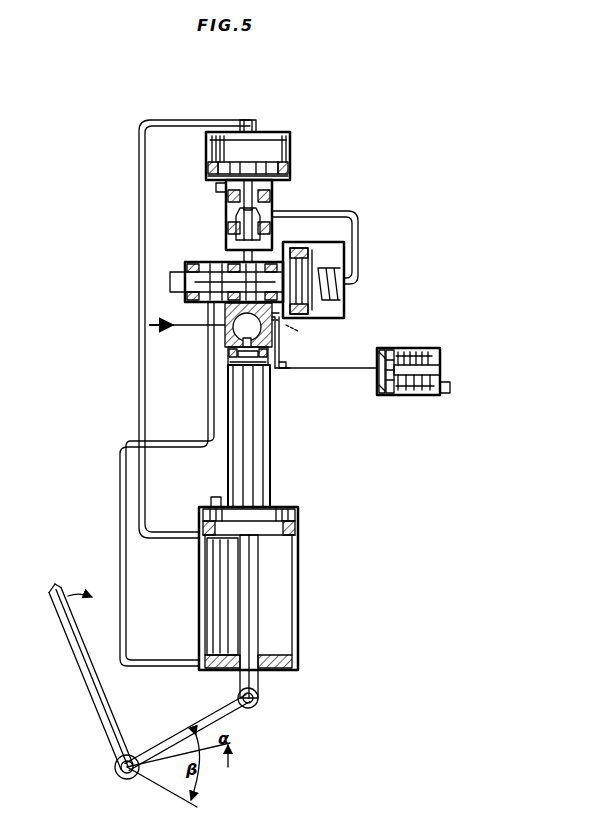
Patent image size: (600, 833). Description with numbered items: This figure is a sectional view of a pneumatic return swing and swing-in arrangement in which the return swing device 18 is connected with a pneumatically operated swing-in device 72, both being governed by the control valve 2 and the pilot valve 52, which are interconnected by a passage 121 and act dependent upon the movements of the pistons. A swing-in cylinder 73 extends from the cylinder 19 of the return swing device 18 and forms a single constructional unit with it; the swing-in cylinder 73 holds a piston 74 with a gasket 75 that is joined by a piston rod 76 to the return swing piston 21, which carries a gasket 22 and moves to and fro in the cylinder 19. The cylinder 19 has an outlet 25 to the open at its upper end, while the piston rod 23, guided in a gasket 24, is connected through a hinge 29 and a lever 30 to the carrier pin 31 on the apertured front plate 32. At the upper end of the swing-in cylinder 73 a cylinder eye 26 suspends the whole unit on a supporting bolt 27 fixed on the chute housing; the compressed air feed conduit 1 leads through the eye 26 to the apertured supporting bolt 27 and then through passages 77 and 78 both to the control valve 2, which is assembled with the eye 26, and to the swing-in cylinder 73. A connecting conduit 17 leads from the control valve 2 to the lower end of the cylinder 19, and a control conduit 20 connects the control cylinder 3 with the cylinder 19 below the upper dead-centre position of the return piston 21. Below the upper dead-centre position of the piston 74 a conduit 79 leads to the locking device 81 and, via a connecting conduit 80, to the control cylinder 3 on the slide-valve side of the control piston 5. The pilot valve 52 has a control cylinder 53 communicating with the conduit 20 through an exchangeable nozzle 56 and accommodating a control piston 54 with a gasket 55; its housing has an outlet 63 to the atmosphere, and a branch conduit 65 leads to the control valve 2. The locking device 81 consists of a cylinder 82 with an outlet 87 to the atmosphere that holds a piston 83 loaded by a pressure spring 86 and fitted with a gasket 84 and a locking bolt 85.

The compressed air feed conduit 1 is at (172, 331).
The control valve 2 is at (306, 240).
The control cylinder 3 is at (345, 295).
The control piston 5 is at (300, 247).
The connecting conduit 17 is at (208, 406).
The return swing device 18 is at (210, 665).
The cylinder 19 is at (298, 600).
The control conduit 20 is at (139, 182).
The return swing piston 21 is at (298, 516).
The gasket 22 is at (298, 530).
The piston rod 23 is at (258, 580).
The gasket 24 is at (270, 662).
The outlet 25 is at (216, 497).
The cylinder eye 26 is at (279, 345).
The supporting bolt 27 is at (295, 327).
The hinge 29 is at (259, 696).
The lever 30 is at (240, 716).
The carrier pin 31 is at (118, 778).
The apertured front plate 32 is at (95, 716).
The pilot valve 52 is at (226, 126).
The control cylinder 53 is at (270, 146).
The control piston 54 is at (262, 160).
The gasket 55 is at (290, 167).
The exchangeable nozzle 56 is at (256, 124).
The outlet 63 is at (216, 188).
The branch conduit 65 is at (358, 224).
The swing-in device 72 is at (268, 392).
The swing-in cylinder 73 is at (263, 437).
The piston 74 is at (230, 366).
The gasket 75 is at (230, 360).
The piston rod 76 is at (248, 472).
The passage 77 is at (210, 306).
The passage 78 is at (226, 338).
The conduit 79 is at (346, 367).
The connecting conduit 80 is at (282, 370).
The locking device 81 is at (430, 336).
The cylinder 82 is at (418, 393).
The piston 83 is at (380, 372).
The gasket 84 is at (389, 394).
The locking bolt 85 is at (440, 370).
The pressure spring 86 is at (404, 352).
The outlet 87 is at (450, 388).
The passage 121 is at (244, 258).